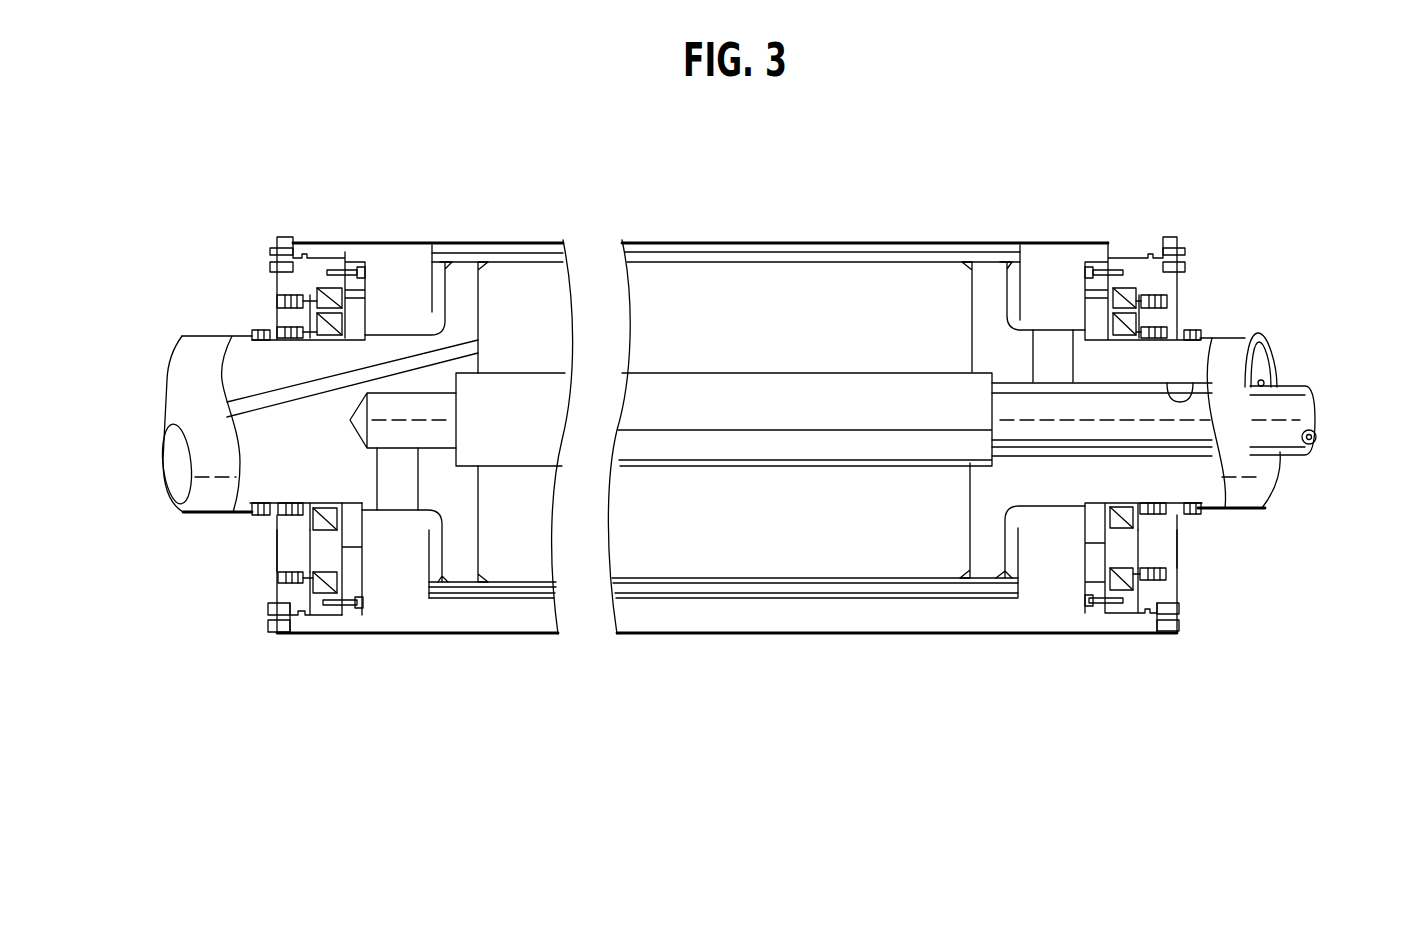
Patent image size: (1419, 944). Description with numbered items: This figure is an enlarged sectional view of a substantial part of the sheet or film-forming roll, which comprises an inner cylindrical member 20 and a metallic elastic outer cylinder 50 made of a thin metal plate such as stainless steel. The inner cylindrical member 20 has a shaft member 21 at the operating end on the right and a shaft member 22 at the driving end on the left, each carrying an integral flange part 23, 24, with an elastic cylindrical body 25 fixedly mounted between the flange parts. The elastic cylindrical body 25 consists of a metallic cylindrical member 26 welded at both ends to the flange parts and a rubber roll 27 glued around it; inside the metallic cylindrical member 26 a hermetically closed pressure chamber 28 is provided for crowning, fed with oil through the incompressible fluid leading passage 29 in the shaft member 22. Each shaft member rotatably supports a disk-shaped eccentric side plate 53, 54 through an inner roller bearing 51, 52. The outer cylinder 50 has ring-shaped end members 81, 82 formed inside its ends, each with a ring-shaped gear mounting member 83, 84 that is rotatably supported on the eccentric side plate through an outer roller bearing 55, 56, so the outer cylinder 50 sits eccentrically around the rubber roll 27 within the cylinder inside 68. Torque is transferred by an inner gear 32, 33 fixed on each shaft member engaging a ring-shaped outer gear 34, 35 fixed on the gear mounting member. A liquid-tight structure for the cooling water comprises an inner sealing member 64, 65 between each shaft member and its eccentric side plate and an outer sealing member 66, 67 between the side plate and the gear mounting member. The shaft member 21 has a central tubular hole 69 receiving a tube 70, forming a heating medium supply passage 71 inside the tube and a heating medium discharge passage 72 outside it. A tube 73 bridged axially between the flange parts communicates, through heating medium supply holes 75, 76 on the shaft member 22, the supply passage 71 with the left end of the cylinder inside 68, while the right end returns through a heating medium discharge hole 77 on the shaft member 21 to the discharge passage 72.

The inner cylindrical member 20 is at (1027, 305).
The shaft member 21 is at (1263, 482).
The shaft member 22 is at (182, 370).
The flange part 23 is at (988, 270).
The flange part 24 is at (466, 272).
The elastic cylindrical body 25 is at (823, 583).
The metallic cylindrical member 26 is at (668, 257).
The rubber roll 27 is at (745, 250).
The pressure chamber 28 is at (800, 278).
The incompressible fluid leading passage 29 is at (397, 365).
The inner gear 32 is at (1093, 317).
The inner gear 33 is at (358, 530).
The outer gear 34 is at (1100, 287).
The outer gear 35 is at (353, 637).
The metallic elastic outer cylinder 50 is at (843, 232).
The inner roller bearing 51 is at (1152, 512).
The inner roller bearing 52 is at (290, 515).
The eccentric side plate 53 is at (1157, 545).
The eccentric side plate 54 is at (290, 547).
The outer roller bearing 55 is at (1150, 583).
The outer roller bearing 56 is at (293, 585).
The inner sealing member 64 is at (1140, 327).
The inner sealing member 65 is at (300, 328).
The outer sealing member 66 is at (1140, 296).
The outer sealing member 67 is at (302, 300).
The cylinder inside 68 is at (720, 620).
The central tubular hole 69 is at (1175, 392).
The tube 70 is at (1305, 400).
The heating medium supply passage 71 is at (1320, 435).
The heating medium discharge passage 72 is at (1280, 383).
The tube 73 is at (681, 452).
The heating medium supply hole 75 is at (440, 412).
The heating medium supply hole 76 is at (403, 480).
The heating medium discharge hole 77 is at (1055, 347).
The end member 81 is at (1117, 625).
The end member 82 is at (328, 623).
The gear mounting member 83 is at (1143, 628).
The gear mounting member 84 is at (298, 632).